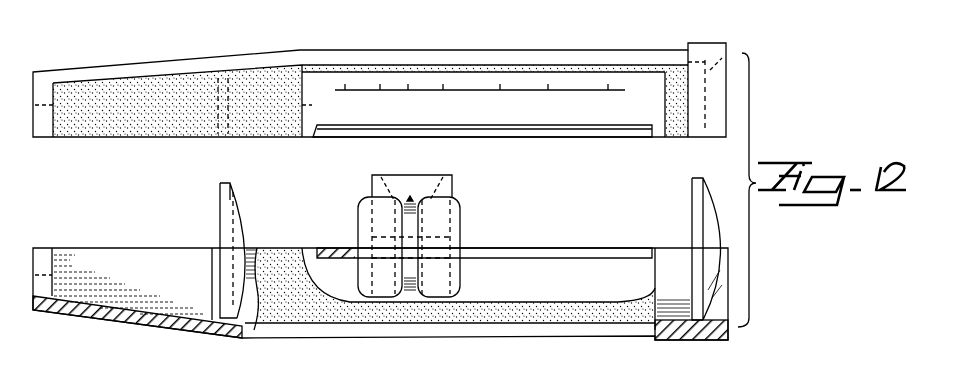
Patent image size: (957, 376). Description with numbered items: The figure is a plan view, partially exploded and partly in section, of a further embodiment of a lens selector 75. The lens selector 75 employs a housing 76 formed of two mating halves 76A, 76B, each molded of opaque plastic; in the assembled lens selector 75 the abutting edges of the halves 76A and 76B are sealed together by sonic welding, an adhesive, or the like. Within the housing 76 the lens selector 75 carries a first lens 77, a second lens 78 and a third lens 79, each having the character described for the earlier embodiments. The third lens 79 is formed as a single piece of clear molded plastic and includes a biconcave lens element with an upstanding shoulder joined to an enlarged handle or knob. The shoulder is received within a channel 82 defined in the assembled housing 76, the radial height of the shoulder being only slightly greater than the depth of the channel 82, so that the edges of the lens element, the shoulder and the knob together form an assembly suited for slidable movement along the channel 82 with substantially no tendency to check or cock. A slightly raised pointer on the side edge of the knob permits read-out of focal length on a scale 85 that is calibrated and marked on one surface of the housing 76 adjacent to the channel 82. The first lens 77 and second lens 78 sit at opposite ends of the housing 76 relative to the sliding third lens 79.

The lens selector 75 is at (644, 49).
The housing 76 is at (93, 139).
The housing half 76A is at (243, 73).
The housing half 76B is at (131, 267).
The first lens 77 is at (240, 226).
The second lens 78 is at (699, 204).
The third lens 79 is at (447, 193).
The channel 82 is at (612, 130).
The scale 85 is at (466, 78).